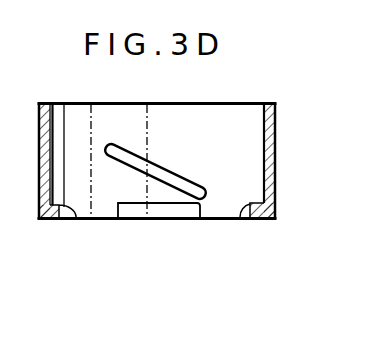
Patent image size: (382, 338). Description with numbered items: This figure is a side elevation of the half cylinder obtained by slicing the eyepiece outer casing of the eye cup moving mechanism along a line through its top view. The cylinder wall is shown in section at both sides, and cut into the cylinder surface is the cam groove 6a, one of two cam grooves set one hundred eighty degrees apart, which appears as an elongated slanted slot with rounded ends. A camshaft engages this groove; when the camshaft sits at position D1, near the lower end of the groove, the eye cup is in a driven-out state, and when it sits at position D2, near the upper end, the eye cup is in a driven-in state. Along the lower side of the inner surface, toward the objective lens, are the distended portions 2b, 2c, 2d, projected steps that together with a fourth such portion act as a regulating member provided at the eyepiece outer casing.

The cam groove 6a is at (112, 147).
The distended portion 2b is at (168, 209).
The distended portion 2c is at (73, 214).
The distended portion 2d is at (250, 210).
The position D1 is at (212, 194).
The position D2 is at (128, 148).